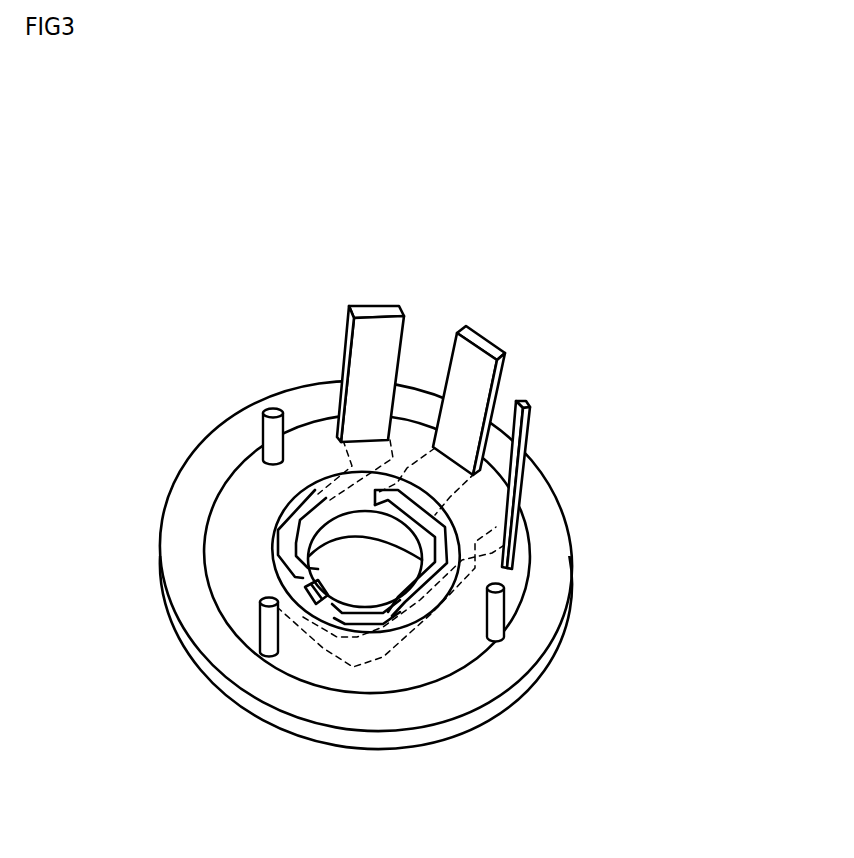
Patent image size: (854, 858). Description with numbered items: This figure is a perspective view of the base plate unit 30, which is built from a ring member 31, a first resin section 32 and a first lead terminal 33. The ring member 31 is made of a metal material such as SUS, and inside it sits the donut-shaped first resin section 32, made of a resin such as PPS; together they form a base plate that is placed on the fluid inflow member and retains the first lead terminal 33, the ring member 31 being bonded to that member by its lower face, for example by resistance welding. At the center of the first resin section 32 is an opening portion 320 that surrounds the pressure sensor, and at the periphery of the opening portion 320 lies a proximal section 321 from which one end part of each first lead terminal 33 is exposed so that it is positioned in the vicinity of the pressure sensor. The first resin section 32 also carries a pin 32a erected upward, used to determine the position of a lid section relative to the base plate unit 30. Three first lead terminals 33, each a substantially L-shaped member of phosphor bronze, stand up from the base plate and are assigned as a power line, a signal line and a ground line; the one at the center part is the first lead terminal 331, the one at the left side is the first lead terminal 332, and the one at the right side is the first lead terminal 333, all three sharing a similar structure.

The base plate unit 30 is at (150, 268).
The ring member 31 is at (473, 693).
The first resin section 32 is at (328, 683).
The pin 32a is at (268, 428).
The opening portion 320 is at (353, 523).
The proximal section 321 is at (335, 670).
The first lead terminal 33 is at (763, 207).
The first lead terminal 331 is at (473, 382).
The first lead terminal 332 is at (532, 460).
The first lead terminal 333 is at (378, 342).